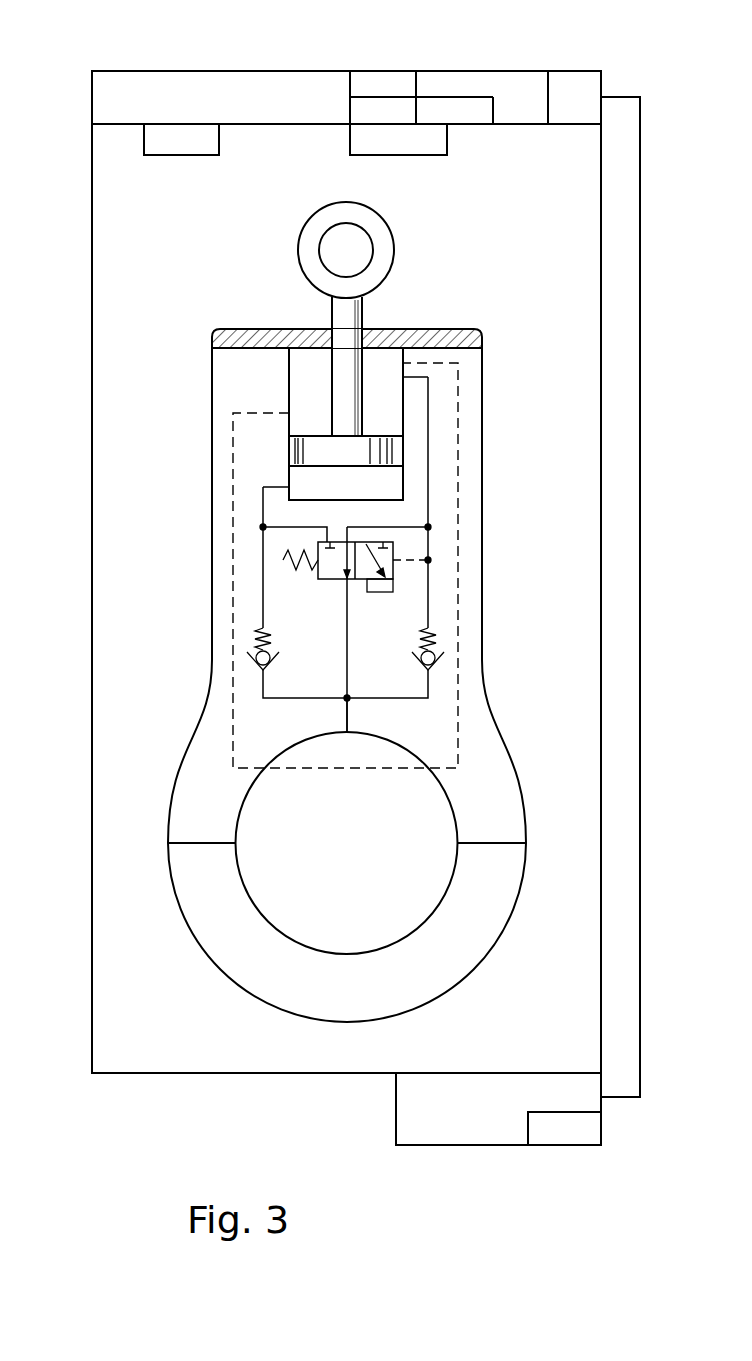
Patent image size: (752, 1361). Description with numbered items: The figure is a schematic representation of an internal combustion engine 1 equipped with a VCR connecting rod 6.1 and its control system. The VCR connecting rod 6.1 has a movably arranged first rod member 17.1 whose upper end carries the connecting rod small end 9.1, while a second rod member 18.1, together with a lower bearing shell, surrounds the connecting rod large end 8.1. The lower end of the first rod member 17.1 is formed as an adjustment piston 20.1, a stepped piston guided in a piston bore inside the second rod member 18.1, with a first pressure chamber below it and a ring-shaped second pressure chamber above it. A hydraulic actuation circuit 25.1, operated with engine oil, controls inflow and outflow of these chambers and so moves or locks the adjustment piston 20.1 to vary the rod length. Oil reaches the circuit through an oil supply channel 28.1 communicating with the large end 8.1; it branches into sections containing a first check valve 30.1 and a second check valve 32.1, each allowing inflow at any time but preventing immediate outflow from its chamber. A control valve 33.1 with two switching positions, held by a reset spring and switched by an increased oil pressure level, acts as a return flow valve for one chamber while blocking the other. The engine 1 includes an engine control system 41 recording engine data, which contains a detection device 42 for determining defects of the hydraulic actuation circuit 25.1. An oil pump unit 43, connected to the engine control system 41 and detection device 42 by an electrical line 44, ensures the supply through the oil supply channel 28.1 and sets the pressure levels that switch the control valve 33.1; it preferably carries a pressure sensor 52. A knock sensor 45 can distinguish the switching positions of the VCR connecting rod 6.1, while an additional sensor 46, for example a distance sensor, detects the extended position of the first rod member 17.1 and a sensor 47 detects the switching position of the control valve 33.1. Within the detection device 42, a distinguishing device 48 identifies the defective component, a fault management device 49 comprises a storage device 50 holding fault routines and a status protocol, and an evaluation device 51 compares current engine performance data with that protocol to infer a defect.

The internal combustion engine 1 is at (125, 1075).
The VCR connecting rod 6.1 is at (301, 522).
The connecting rod large end 8.1 is at (300, 1037).
The connecting rod small end 9.1 is at (298, 250).
The first rod member 17.1 is at (360, 317).
The second rod member 18.1 is at (222, 448).
The adjustment piston 20.1 is at (392, 453).
The hydraulic actuation circuit 25.1 is at (462, 542).
The oil supply channel 28.1 is at (347, 722).
The first check valve 30.1 is at (248, 657).
The second check valve 32.1 is at (447, 658).
The control valve 33.1 is at (332, 587).
The engine control system 41 is at (206, 78).
The detection device 42 is at (447, 78).
The oil pump unit 43 is at (442, 1147).
The electrical line 44 is at (642, 470).
The knock sensor 45 is at (166, 145).
The sensor 46 is at (438, 143).
The sensor 47 is at (376, 594).
The distinguishing device 48 is at (395, 78).
The fault management device 49 is at (363, 107).
The storage device 50 is at (477, 107).
The evaluation device 51 is at (578, 78).
The pressure sensor 52 is at (567, 1136).